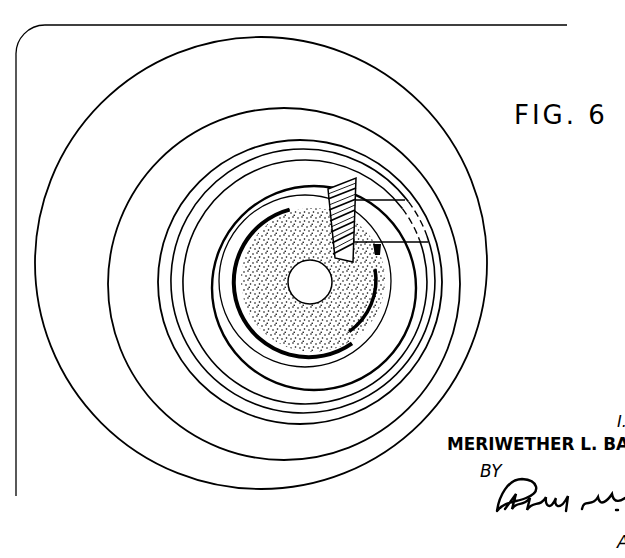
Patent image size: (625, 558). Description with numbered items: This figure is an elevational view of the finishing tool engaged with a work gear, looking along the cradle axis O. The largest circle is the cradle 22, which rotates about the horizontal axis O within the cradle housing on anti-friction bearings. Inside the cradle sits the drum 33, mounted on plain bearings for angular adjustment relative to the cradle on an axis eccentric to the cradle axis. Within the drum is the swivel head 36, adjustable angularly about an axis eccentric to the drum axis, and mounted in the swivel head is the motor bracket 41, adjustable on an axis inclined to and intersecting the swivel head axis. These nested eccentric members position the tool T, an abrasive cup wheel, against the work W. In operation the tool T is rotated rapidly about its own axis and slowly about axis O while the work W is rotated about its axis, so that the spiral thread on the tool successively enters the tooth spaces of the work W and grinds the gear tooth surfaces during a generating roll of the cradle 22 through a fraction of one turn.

The cradle 22 is at (160, 119).
The drum 33 is at (176, 192).
The swivel head 36 is at (157, 284).
The motor bracket 41 is at (262, 355).
The cradle axis O is at (258, 259).
The work W is at (343, 186).
The tool T is at (350, 291).